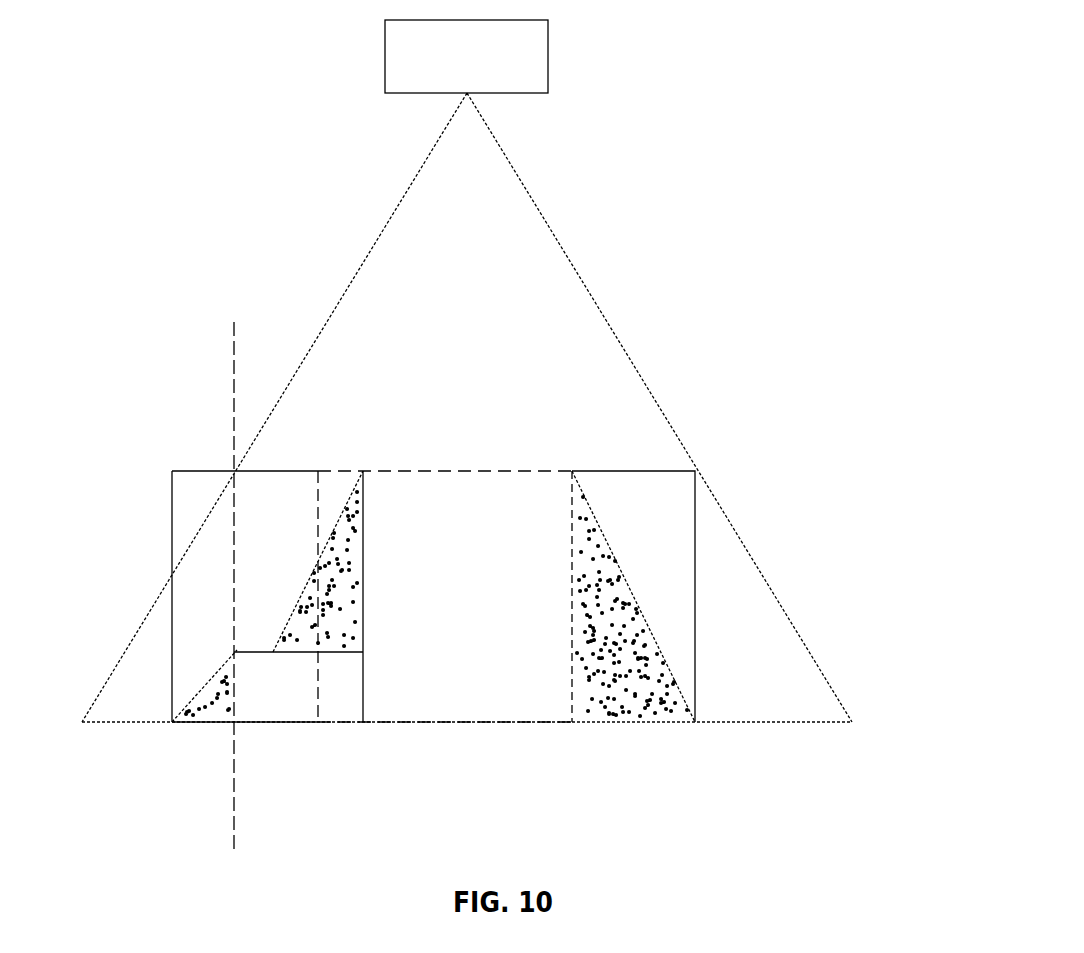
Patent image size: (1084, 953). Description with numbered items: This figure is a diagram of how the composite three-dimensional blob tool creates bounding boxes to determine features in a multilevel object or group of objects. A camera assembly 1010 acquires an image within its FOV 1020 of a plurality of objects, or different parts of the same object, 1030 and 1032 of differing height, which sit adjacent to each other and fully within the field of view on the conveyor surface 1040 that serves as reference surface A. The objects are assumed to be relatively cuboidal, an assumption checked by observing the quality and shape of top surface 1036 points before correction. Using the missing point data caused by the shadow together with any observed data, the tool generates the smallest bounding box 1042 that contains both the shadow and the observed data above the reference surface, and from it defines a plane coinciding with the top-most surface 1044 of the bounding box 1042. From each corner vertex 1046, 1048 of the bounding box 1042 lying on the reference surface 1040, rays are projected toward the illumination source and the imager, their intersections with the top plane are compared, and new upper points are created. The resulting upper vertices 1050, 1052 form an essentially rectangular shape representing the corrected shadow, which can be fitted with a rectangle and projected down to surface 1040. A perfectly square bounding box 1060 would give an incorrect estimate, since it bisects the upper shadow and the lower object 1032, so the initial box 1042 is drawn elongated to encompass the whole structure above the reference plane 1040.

The camera assembly 1010 is at (530, 60).
The FOV 1020 is at (775, 590).
The conveyor surface 1040 is at (792, 718).
The bounding box 1042 is at (697, 513).
The top-most surface 1044 is at (640, 471).
The upper vertex 1050 is at (572, 471).
The upper vertex 1052 is at (234, 471).
The corner/vertex 1046 is at (172, 722).
The corner/vertex 1048 is at (695, 722).
The object 1032 is at (270, 698).
The top surface 1036 is at (338, 653).
The square bounding box 1060 is at (437, 722).
The object 1030 is at (525, 698).